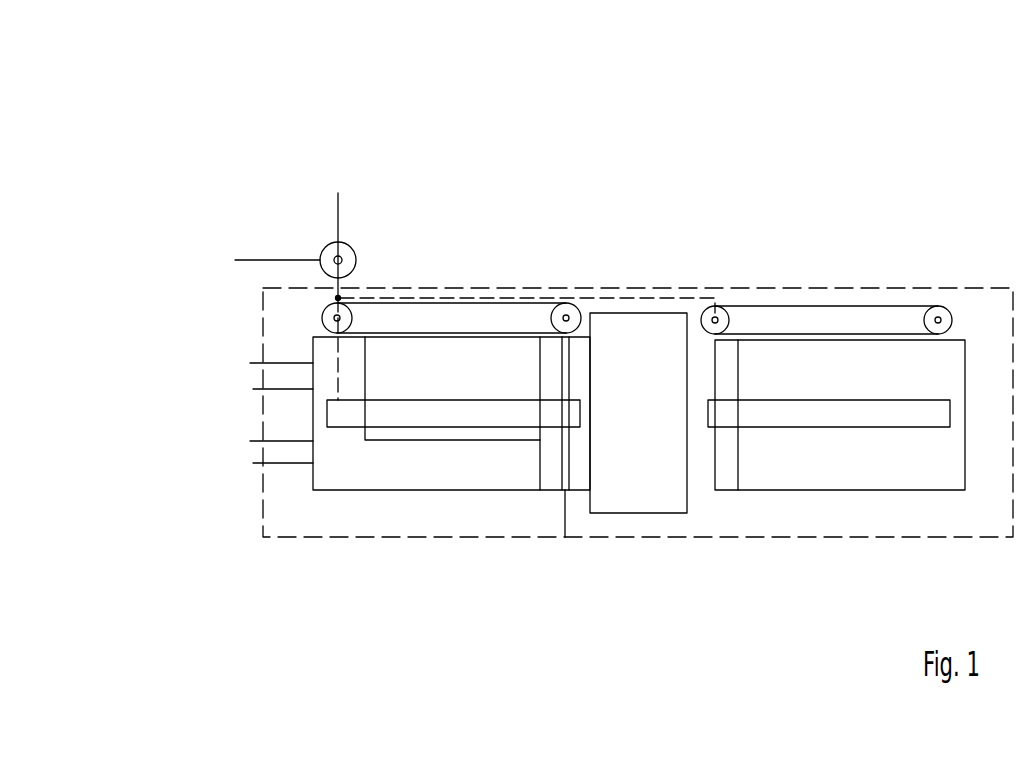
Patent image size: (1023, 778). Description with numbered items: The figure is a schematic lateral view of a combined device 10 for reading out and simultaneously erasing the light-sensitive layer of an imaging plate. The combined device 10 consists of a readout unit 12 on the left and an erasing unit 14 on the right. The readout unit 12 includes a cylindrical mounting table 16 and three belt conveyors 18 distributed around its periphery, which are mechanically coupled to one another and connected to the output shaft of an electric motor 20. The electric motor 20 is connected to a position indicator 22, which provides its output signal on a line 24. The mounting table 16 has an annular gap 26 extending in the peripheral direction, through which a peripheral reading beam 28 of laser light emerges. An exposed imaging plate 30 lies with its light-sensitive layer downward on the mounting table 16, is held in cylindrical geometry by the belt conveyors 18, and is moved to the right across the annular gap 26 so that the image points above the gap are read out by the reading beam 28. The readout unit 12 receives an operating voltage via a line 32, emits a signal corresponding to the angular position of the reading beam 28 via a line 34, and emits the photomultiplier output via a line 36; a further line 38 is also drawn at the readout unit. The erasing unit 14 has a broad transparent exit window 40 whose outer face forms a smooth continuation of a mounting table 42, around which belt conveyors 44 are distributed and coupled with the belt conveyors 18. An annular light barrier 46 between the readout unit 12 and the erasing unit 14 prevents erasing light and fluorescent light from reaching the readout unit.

The combined device 10 is at (802, 143).
The readout unit 12 is at (472, 277).
The erasing unit 14 is at (900, 273).
The mounting table 16 is at (433, 458).
The belt conveyors 18 is at (497, 317).
The electric motor 20 is at (357, 267).
The position indicator 22 is at (348, 245).
The line 24 is at (263, 260).
The annular gap 26 is at (568, 457).
The reading beam 28 is at (565, 520).
The imaging plate 30 is at (393, 385).
The line 32 is at (277, 362).
The line 34 is at (277, 389).
The line 36 is at (277, 441).
The supply line 38 is at (277, 463).
The exit window 40 is at (730, 468).
The mounting table 42 is at (787, 433).
The belt conveyors 44 is at (838, 325).
The annular light barrier 46 is at (652, 348).